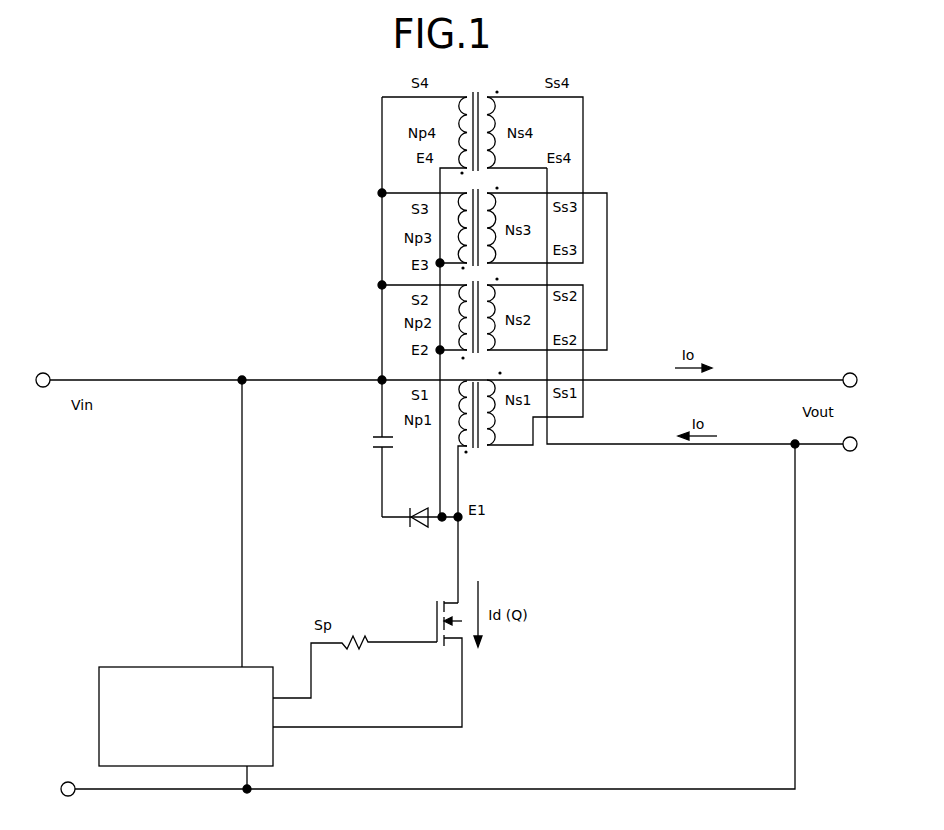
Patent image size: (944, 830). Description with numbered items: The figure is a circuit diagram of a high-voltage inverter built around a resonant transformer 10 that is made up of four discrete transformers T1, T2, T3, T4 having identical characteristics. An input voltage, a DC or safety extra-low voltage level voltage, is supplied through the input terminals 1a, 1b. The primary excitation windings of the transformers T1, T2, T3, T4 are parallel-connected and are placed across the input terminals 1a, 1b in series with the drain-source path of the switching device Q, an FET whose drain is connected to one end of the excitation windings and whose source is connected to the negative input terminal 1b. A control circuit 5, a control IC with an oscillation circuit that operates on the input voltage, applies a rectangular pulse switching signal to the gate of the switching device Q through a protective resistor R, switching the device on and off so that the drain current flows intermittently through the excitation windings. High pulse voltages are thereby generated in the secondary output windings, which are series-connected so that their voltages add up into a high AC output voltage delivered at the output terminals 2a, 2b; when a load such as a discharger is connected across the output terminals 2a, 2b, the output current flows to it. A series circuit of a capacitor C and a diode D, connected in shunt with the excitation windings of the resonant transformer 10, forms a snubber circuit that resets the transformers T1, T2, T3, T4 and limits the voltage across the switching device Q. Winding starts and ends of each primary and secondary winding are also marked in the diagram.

The input terminal 1a is at (46, 372).
The negative input terminal 1b is at (64, 781).
The output terminal 2a is at (847, 372).
The output terminal 2b is at (850, 452).
The control circuit 5 is at (163, 666).
The resonant transformer 10 is at (624, 151).
The transformer T1 is at (480, 422).
The transformer T2 is at (479, 325).
The transformer T3 is at (478, 223).
The transformer T4 is at (479, 125).
The capacitor C is at (372, 445).
The diode D is at (419, 531).
The switching device Q is at (367, 664).
The protective resistor R is at (355, 667).